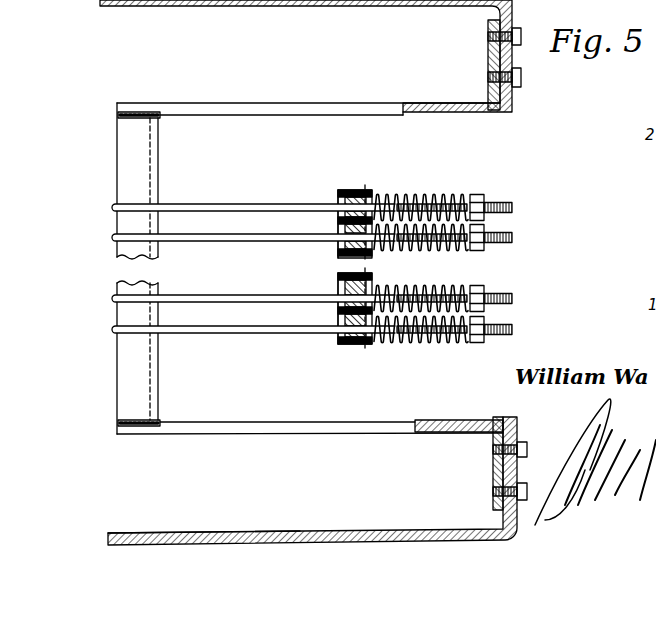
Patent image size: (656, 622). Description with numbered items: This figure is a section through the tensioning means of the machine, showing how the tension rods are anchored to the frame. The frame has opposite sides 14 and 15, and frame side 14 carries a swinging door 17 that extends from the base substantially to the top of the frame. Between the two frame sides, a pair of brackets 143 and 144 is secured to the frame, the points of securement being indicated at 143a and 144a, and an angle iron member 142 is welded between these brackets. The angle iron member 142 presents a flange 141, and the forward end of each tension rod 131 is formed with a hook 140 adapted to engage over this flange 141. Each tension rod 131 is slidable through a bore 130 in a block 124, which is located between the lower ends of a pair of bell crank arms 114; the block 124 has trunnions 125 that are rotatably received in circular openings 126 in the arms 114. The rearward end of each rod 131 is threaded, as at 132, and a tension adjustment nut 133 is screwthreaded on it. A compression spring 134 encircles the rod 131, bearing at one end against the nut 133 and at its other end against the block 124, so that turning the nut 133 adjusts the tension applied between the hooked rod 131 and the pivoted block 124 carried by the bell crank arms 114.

The frame side 14 is at (406, 538).
The frame side 15 is at (305, 6).
The swinging door 17 is at (248, 542).
The bell crank arms 114 is at (370, 198).
The block 124 is at (342, 218).
The trunnions 125 is at (350, 190).
The circular openings 126 is at (362, 190).
The bore 130 is at (340, 205).
The tension rod 131 is at (232, 234).
The threaded end 132 is at (512, 207).
The tension adjustment nut 133 is at (478, 192).
The compression spring 134 is at (455, 192).
The hook 140 is at (112, 207).
The flange 141 is at (125, 170).
The angle iron member 142 is at (158, 172).
The bracket 143 is at (240, 103).
The bracket securement 143a is at (490, 52).
The bracket 144 is at (262, 426).
The bracket securement 144a is at (493, 470).